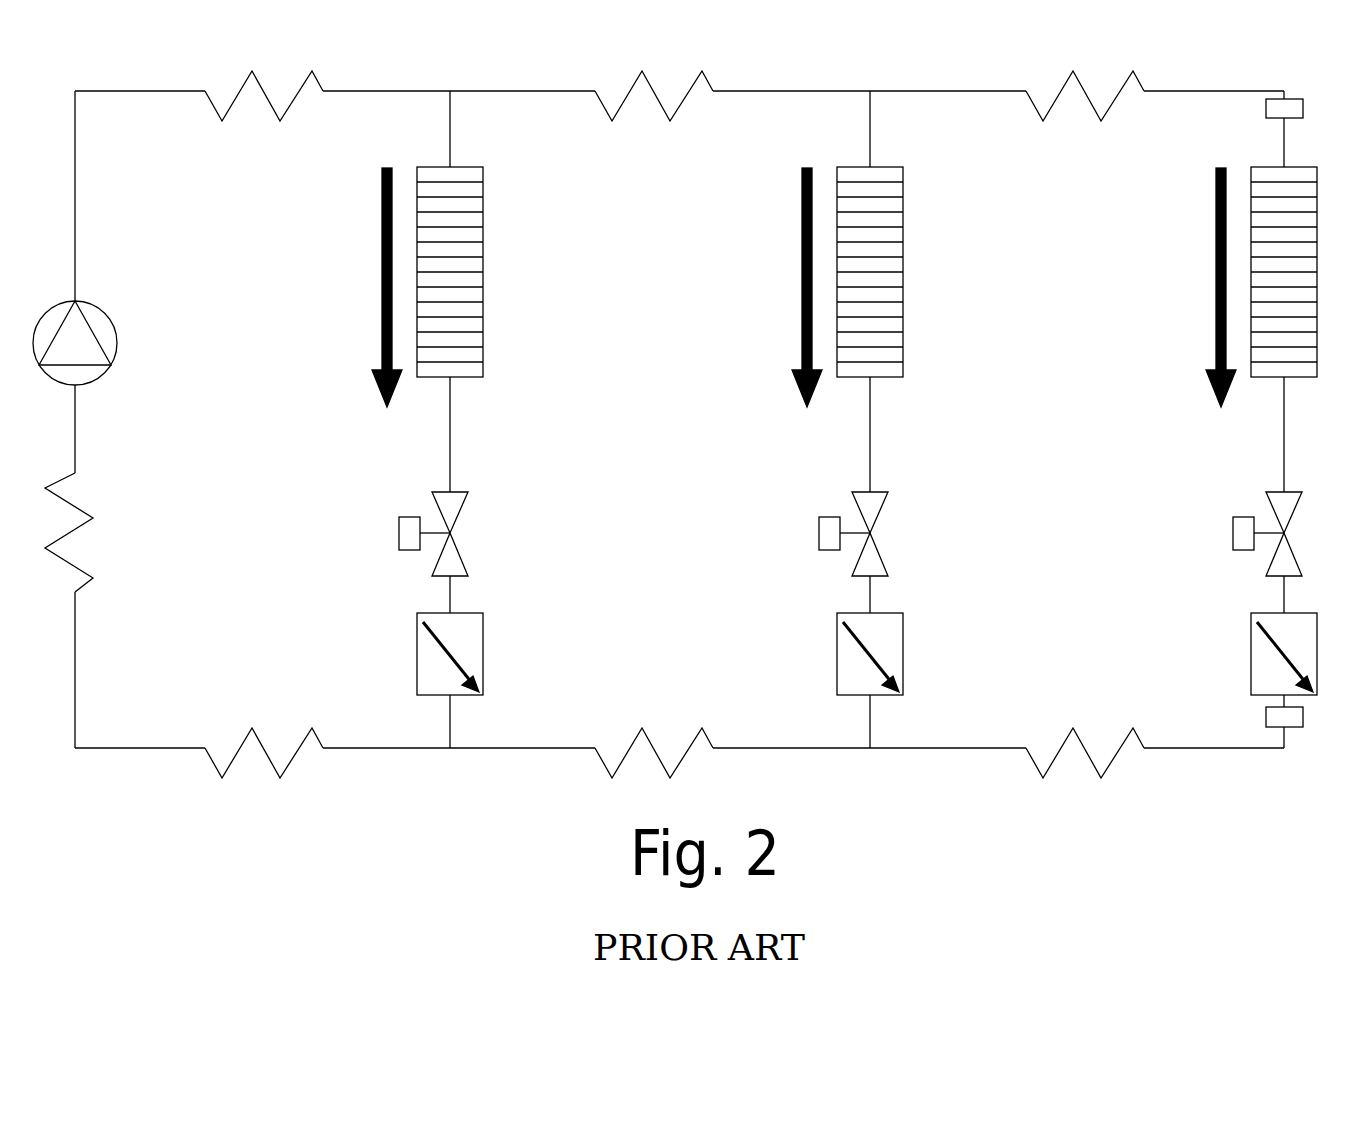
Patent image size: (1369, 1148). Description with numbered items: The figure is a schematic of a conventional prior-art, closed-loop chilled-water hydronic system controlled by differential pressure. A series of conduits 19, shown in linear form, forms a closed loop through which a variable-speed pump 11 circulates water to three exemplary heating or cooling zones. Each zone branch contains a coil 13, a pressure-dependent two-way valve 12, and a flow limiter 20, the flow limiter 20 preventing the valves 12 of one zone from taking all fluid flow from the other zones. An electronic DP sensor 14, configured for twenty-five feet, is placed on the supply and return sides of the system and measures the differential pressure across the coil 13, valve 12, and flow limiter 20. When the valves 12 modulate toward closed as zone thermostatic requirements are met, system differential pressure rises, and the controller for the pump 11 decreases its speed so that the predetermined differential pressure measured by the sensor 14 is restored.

The pump 11 is at (117, 347).
The valve 12 is at (398, 532).
The coil 13 is at (483, 272).
The DP sensor 14 is at (1305, 108).
The conduits 19 is at (382, 751).
The flow limiter 20 is at (417, 652).